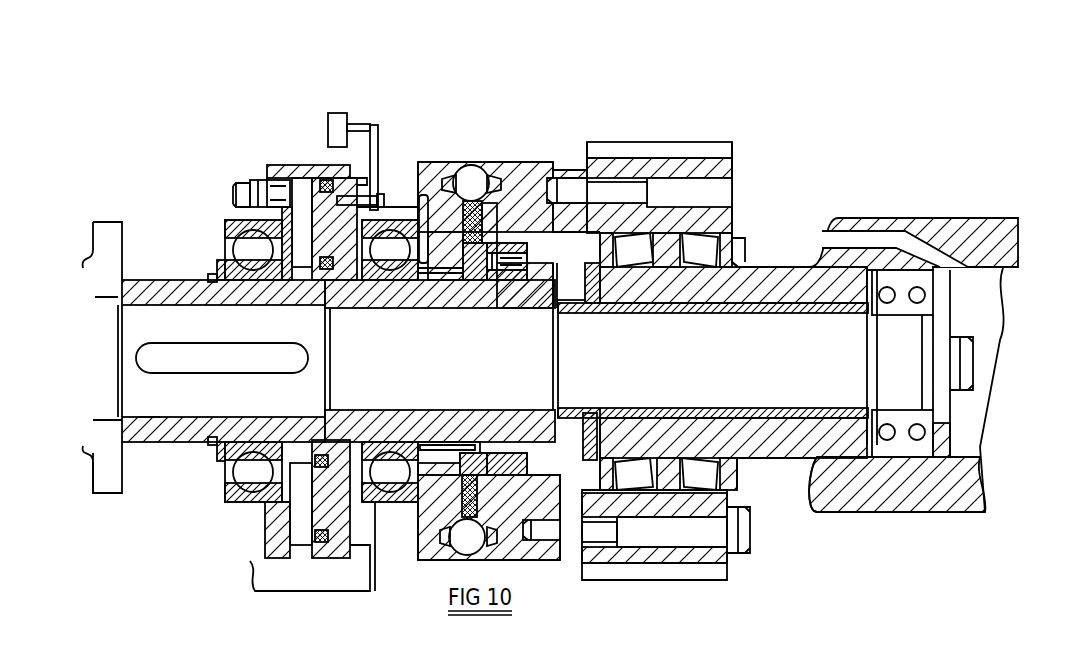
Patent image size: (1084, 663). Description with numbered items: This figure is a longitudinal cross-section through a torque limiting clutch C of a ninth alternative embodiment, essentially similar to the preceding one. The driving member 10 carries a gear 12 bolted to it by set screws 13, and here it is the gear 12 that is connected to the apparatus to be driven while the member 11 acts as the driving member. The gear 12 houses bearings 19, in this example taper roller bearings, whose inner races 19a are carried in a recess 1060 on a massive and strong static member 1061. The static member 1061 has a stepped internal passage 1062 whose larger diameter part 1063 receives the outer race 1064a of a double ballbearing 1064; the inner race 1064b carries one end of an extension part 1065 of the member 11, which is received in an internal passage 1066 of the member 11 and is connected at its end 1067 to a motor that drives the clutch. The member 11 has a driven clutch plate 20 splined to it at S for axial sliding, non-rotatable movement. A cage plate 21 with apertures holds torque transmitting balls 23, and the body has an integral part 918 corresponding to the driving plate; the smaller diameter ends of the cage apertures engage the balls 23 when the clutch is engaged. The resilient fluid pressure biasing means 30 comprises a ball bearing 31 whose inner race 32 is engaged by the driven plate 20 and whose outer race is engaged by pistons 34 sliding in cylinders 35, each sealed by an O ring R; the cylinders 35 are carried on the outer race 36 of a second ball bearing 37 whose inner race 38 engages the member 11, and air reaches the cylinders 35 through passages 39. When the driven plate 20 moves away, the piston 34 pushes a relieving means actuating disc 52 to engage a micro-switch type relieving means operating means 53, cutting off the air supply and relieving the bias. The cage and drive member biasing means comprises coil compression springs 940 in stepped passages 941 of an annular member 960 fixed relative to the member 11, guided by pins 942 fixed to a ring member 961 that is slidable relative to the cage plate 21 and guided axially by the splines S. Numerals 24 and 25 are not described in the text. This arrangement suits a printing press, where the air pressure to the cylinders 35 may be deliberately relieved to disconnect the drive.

The driving member 10 is at (575, 168).
The driven member 11 is at (191, 432).
The drive gear 12 is at (727, 168).
The set screws 13 is at (744, 554).
The taper roller bearings 19 is at (693, 278).
The inner races 19a is at (633, 276).
The driven clutch plate 20 is at (432, 163).
The cage plate 21 is at (473, 165).
The balls 23 is at (476, 178).
The housing portion 24 is at (510, 180).
The pin 25 is at (470, 165).
The resilient fluid pressure biasing means 30 is at (290, 135).
The ball bearing 31 is at (405, 212).
The inner race 32 is at (394, 281).
The pistons 34 is at (366, 194).
The cylinders 35 is at (283, 165).
The outer race 36 is at (228, 221).
The second ball bearing 37 is at (172, 240).
The inner race 38 is at (255, 281).
The passages 39 is at (272, 183).
The relieving means actuating disc 52 is at (378, 132).
The relieving means operating means 53 is at (335, 113).
The driving clutch plate part 918 is at (482, 170).
The coil compression springs 940 is at (490, 292).
The stepped passages 941 is at (518, 175).
The pins 942 is at (500, 280).
The annular member 960 is at (528, 249).
The ring member 961 is at (471, 281).
The recess 1060 is at (738, 266).
The static member 1061 is at (979, 225).
The stepped internal passage 1062 is at (952, 513).
The larger diameter part 1063 is at (980, 448).
The double ballbearing 1064 is at (820, 479).
The outer race 1064a is at (855, 514).
The inner race 1064b is at (896, 411).
The extension part 1065 is at (717, 357).
The internal passage 1066 is at (153, 420).
The end 1067 is at (78, 478).
The torque limiting clutch C is at (700, 115).
The O ring seal R is at (301, 361).
The splines S is at (432, 285).